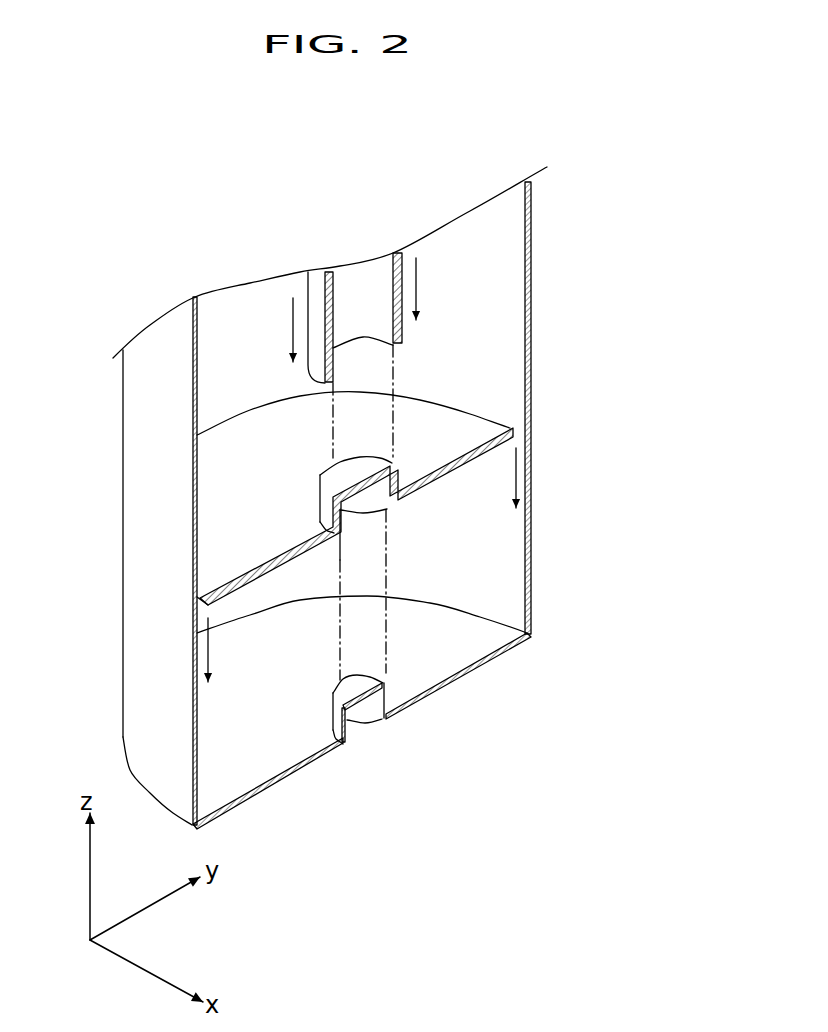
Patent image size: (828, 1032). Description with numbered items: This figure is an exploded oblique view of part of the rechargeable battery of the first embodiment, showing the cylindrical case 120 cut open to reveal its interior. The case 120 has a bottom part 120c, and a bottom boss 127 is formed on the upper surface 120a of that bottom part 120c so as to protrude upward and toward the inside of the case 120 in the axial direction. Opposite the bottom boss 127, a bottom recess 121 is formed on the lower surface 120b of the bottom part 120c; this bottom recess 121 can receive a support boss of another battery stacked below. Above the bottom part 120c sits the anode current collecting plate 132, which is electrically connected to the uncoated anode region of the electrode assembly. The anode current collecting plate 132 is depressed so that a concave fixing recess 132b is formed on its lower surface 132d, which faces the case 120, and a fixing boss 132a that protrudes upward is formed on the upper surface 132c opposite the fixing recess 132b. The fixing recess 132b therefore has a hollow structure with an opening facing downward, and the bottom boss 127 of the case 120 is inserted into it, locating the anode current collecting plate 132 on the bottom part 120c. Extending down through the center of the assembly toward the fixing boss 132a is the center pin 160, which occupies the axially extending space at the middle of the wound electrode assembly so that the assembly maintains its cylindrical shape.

The case 120 is at (143, 497).
The upper surface of bottom part 120a is at (245, 788).
The lower surface of bottom part 120b is at (250, 802).
The bottom part of case 120c is at (518, 650).
The bottom recess 121 is at (348, 732).
The bottom boss 127 is at (367, 675).
The anode current collecting plate 132 is at (470, 427).
The fixing boss 132a is at (392, 452).
The fixing recess 132b is at (362, 492).
The upper surface of anode current collecting plate 132c is at (225, 590).
The lower surface of anode current collecting plate 132d is at (228, 601).
The center pin 160 is at (403, 297).